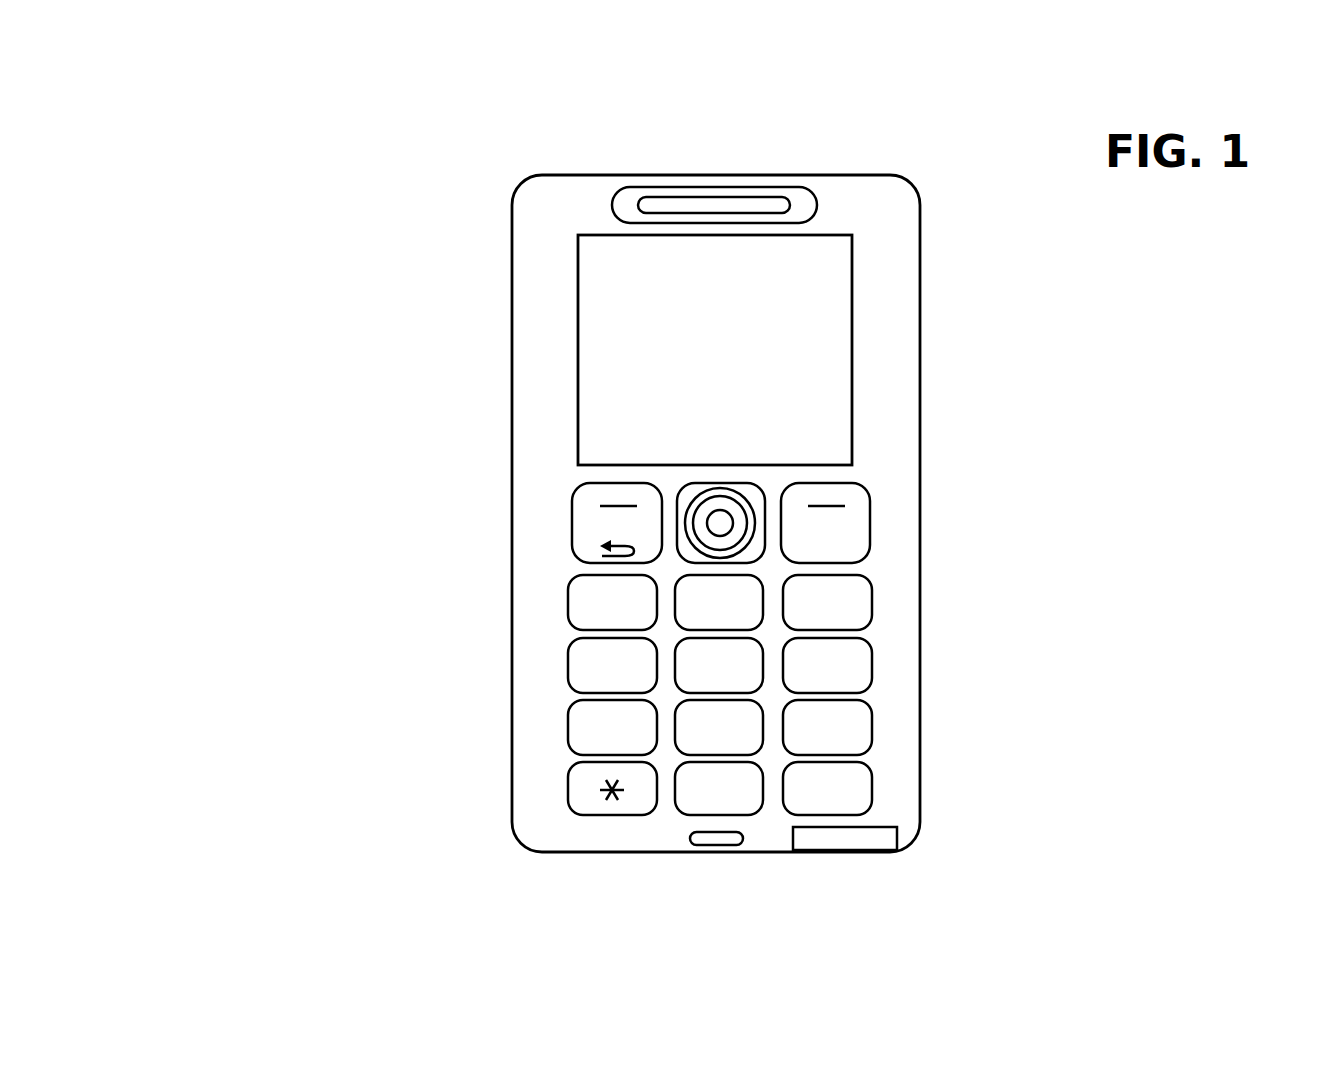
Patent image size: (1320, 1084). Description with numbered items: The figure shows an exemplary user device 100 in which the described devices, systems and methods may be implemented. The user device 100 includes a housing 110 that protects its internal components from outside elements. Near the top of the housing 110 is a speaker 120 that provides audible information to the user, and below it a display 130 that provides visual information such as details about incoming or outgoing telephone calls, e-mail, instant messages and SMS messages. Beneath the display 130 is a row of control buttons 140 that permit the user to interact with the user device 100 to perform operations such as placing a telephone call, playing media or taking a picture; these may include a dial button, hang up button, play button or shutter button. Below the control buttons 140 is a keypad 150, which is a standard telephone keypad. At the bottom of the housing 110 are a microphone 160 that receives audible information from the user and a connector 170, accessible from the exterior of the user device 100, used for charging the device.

The user device 100 is at (266, 139).
The housing 110 is at (512, 222).
The speaker 120 is at (817, 203).
The display 130 is at (852, 374).
The control buttons 140 is at (885, 490).
The keypad 150 is at (890, 782).
The microphone 160 is at (717, 846).
The connector 170 is at (875, 839).